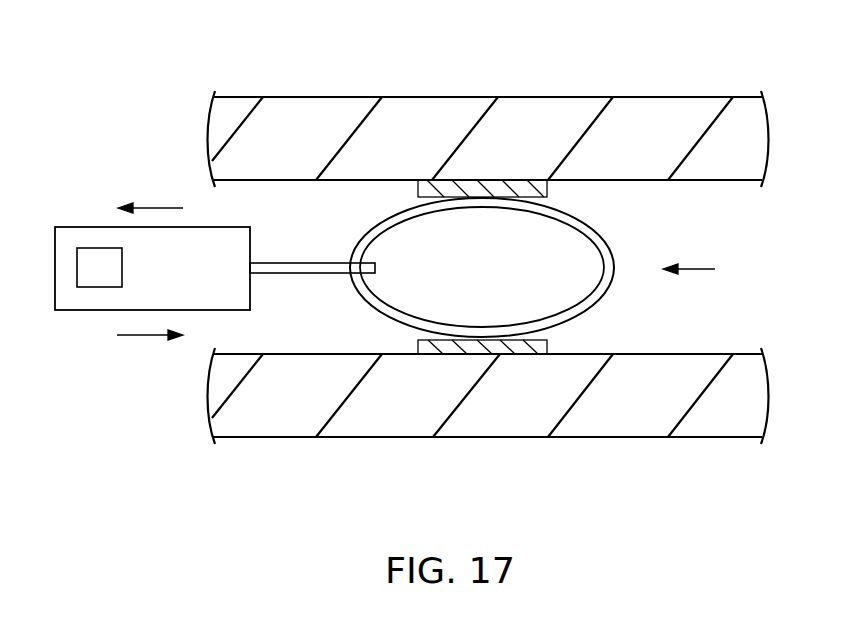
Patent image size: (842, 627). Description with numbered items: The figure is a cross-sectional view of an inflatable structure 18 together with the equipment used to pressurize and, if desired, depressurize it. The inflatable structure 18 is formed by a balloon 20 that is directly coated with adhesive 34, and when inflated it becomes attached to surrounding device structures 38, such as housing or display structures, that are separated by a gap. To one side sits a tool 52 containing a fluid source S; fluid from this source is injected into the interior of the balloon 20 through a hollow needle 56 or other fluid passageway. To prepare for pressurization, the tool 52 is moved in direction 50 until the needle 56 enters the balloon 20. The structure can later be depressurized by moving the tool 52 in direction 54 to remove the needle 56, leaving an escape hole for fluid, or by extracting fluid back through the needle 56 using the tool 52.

The inflatable structure 18 is at (705, 269).
The balloon 20 is at (605, 290).
The adhesive 34 is at (547, 185).
The structures 38 is at (590, 114).
The direction 50 is at (157, 337).
The tool 52 is at (80, 311).
The direction 54 is at (150, 207).
The hollow needle 56 is at (318, 274).